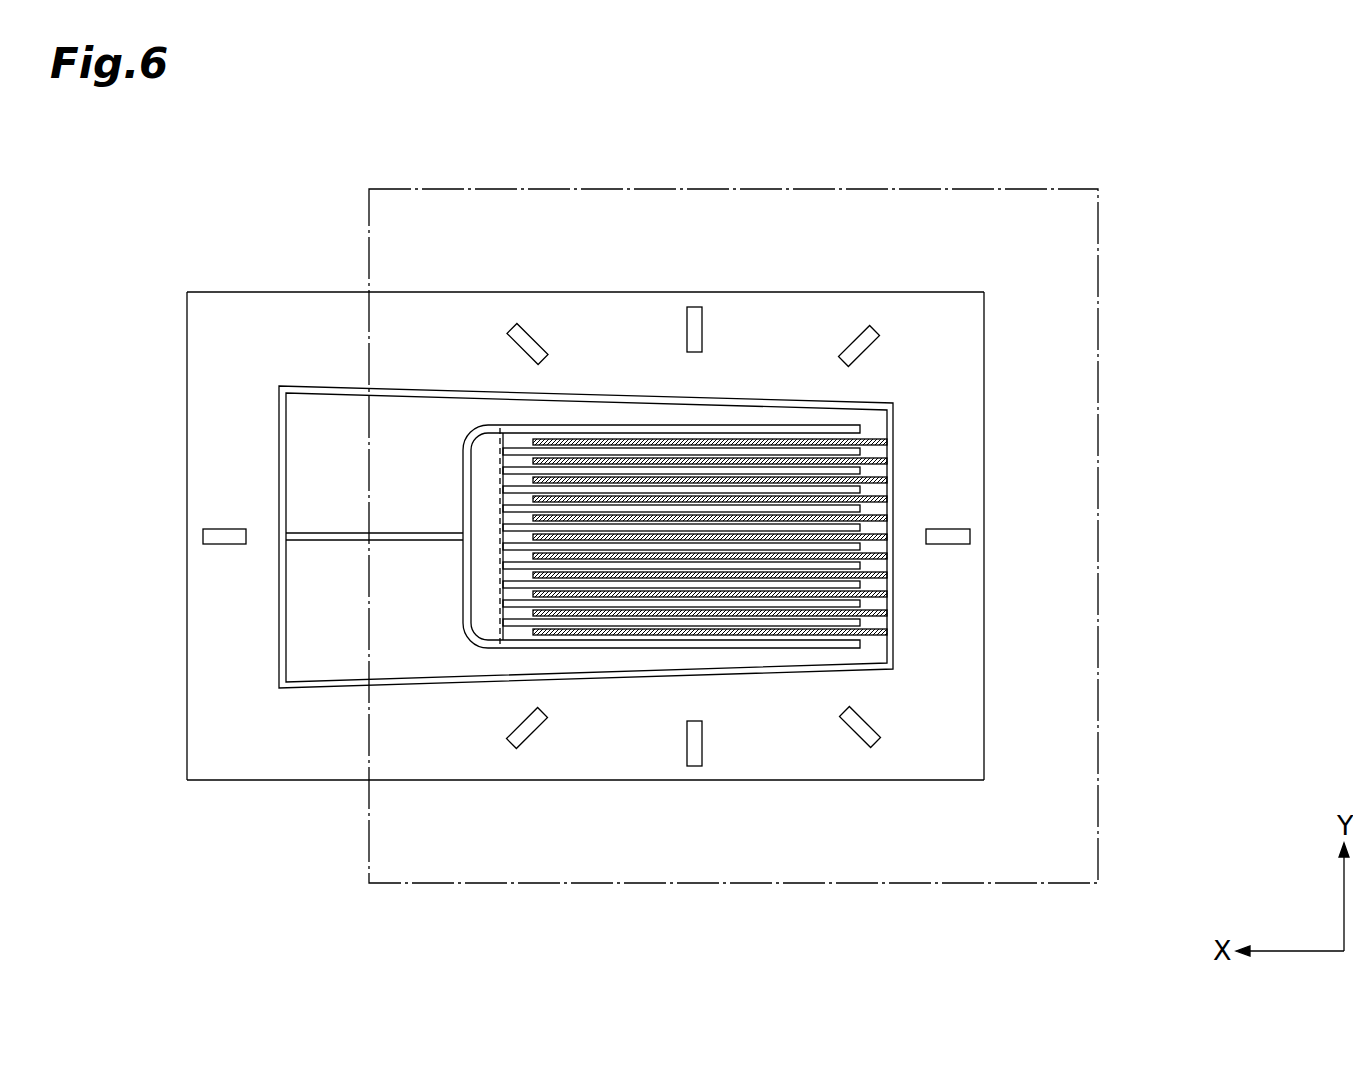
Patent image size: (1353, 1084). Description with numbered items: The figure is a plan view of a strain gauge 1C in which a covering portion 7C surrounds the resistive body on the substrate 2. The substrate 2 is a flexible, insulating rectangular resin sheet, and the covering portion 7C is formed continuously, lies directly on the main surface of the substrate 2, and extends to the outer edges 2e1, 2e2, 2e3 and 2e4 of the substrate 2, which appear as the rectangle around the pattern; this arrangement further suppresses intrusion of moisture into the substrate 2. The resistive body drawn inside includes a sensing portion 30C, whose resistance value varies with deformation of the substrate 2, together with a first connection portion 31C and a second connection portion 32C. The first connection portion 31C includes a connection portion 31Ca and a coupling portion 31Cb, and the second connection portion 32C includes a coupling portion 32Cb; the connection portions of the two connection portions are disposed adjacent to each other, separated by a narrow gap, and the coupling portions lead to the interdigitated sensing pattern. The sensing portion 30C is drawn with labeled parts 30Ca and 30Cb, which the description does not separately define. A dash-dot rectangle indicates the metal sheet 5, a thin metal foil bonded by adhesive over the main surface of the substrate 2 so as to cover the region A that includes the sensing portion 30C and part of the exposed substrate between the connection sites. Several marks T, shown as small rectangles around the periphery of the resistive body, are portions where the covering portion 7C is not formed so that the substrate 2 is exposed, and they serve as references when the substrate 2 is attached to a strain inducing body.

The strain gauge 1C is at (1177, 147).
The substrate 2 is at (895, 662).
The outer edge 2e1 is at (187, 691).
The outer edge 2e2 is at (985, 397).
The outer edge 2e3 is at (215, 292).
The outer edge 2e4 is at (210, 782).
The metal sheet 5 is at (1057, 189).
The covering portion 7C is at (208, 362).
The sensing portion 30C is at (650, 644).
The lower electrode base portion 30Ca is at (598, 633).
The lower electrode finger portions 30Cb is at (889, 623).
The first connection portion 31C is at (320, 425).
The connection portion 31Ca is at (318, 457).
The coupling portion 31Cb is at (603, 418).
The second connection portion 32C is at (308, 651).
The coupling portion 32Cb is at (512, 662).
The marks T is at (203, 536).
The region A is at (497, 547).